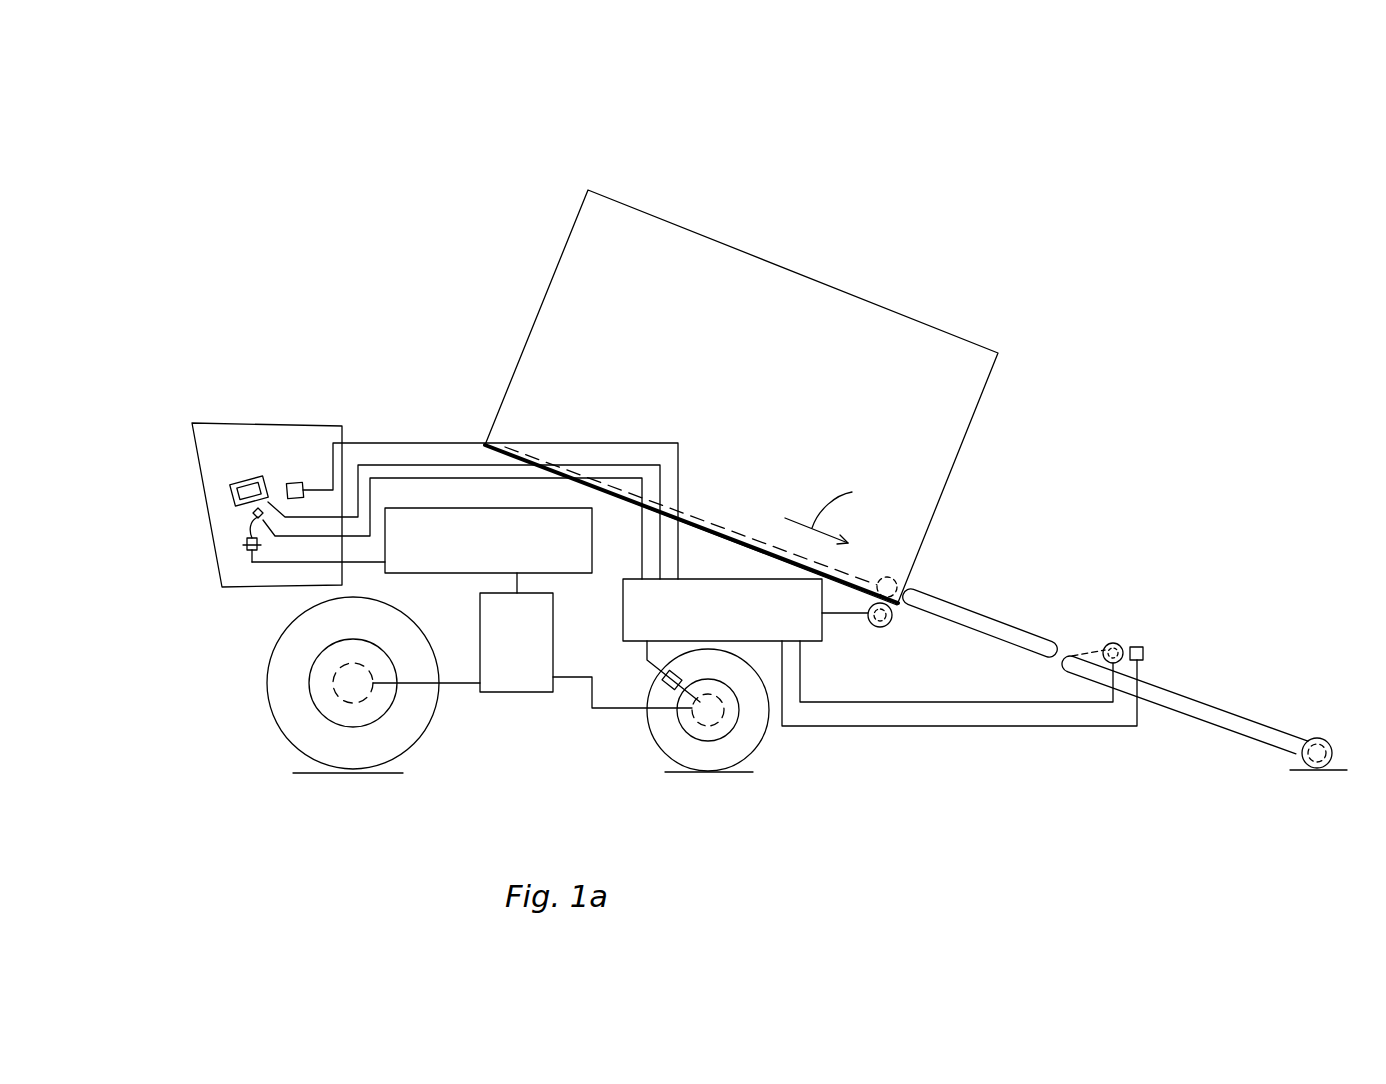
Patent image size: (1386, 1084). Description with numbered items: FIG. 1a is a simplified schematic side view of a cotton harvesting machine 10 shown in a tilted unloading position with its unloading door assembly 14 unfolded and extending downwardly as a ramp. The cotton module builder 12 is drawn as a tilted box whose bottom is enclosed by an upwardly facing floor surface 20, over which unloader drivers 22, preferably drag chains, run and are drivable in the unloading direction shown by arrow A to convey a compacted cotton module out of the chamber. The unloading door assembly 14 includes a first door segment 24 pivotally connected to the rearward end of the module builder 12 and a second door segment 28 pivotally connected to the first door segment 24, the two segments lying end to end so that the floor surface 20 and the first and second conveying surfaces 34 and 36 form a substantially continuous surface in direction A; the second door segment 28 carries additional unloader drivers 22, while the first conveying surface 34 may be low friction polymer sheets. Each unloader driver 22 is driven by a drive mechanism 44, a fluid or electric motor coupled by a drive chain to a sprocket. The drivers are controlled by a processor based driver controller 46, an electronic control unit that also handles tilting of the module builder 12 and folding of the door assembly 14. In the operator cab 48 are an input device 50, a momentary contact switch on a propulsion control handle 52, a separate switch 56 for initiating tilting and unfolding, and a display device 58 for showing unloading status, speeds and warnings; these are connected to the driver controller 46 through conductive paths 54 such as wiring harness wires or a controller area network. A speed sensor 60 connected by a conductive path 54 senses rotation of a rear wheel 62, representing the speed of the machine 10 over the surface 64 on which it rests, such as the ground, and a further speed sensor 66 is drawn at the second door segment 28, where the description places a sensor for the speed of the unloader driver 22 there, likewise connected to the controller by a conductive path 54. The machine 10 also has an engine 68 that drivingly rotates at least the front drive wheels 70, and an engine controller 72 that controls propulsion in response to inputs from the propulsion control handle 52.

The cotton harvesting machine 10 is at (978, 267).
The module builder 12 is at (814, 277).
The unloading door assembly 14 is at (1104, 640).
The floor surface 20 is at (732, 523).
The unloader drivers 22 is at (1272, 727).
The first door segment 24 is at (992, 620).
The second door segment 28 is at (1238, 713).
The first conveying surface 34 is at (938, 600).
The second conveying surface 36 is at (1190, 693).
The drive mechanism 44 is at (887, 627).
The driver controller 46 is at (828, 624).
The operator cab 48 is at (325, 425).
The input device 50 is at (253, 512).
The propulsion control handle 52 is at (245, 532).
The conductive paths 54 is at (435, 478).
The switch 56 is at (295, 483).
The display device 58 is at (243, 478).
The speed sensor 60 is at (662, 702).
The rear wheel 62 is at (760, 740).
The surface 64 is at (668, 766).
The sensor 66 is at (1143, 650).
The engine 68 is at (533, 692).
The front drive wheels 70 is at (283, 736).
The engine controller 72 is at (463, 573).